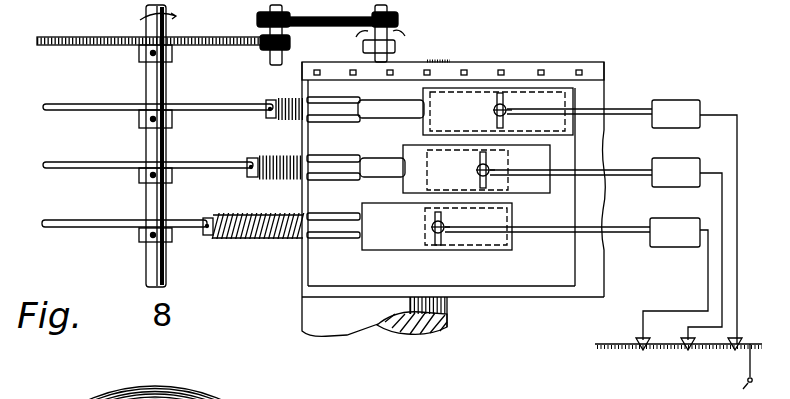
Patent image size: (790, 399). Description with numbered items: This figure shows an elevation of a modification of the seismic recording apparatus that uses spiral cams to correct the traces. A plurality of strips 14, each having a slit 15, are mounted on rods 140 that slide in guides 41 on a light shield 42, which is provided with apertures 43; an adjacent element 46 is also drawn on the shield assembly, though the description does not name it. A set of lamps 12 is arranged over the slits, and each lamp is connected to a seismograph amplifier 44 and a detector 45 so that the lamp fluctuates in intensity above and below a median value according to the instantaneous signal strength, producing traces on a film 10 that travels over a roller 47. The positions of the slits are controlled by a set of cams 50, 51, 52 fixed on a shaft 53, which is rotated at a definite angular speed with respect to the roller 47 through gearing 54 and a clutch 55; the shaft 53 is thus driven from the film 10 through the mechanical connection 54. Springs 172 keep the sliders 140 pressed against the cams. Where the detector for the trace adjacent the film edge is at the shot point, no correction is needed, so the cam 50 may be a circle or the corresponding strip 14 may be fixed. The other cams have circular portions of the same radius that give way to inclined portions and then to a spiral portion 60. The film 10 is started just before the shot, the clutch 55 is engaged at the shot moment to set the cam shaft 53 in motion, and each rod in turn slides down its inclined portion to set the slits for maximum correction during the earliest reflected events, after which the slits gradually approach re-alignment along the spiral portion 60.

The film 10 is at (558, 298).
The lamps 12 is at (447, 234).
The strips 14 is at (548, 97).
The slits 15 is at (503, 105).
The guides 41 is at (337, 122).
The light shield 42 is at (312, 87).
The apertures 43 is at (477, 92).
The seismograph amplifier 44 is at (686, 101).
The detector 45 is at (733, 343).
The cover sheet 46 is at (592, 66).
The roller 47 is at (302, 322).
The cam 50 is at (72, 107).
The cam 51 is at (79, 162).
The cam 52 is at (71, 221).
The shaft 53 is at (167, 77).
The gearing 54 is at (306, 31).
The clutch 55 is at (397, 50).
The spiral portion 60 is at (181, 395).
The rods 140 is at (383, 101).
The springs 172 is at (297, 119).